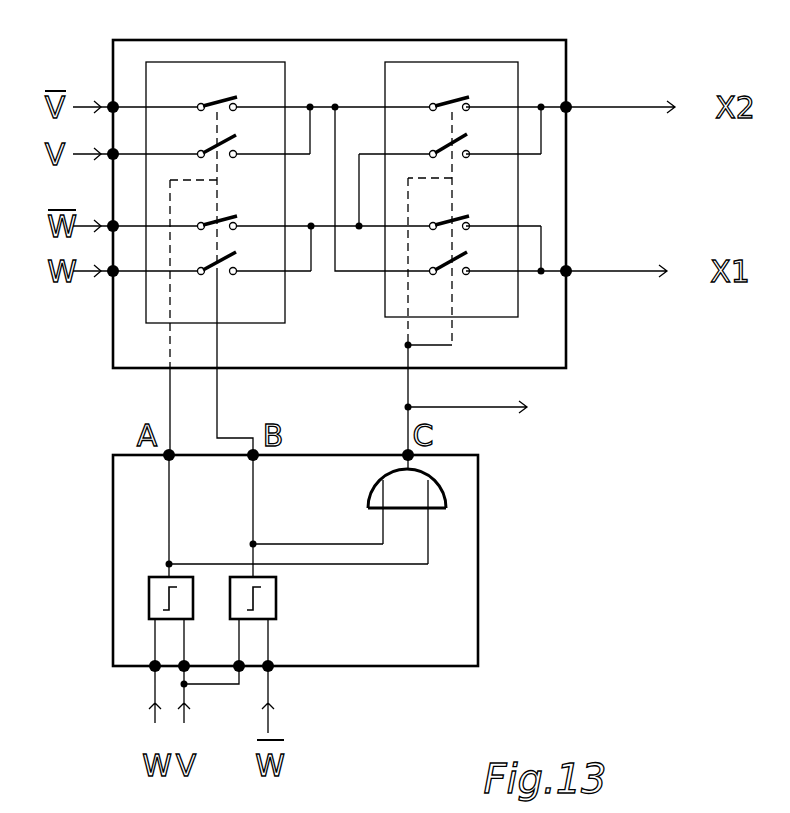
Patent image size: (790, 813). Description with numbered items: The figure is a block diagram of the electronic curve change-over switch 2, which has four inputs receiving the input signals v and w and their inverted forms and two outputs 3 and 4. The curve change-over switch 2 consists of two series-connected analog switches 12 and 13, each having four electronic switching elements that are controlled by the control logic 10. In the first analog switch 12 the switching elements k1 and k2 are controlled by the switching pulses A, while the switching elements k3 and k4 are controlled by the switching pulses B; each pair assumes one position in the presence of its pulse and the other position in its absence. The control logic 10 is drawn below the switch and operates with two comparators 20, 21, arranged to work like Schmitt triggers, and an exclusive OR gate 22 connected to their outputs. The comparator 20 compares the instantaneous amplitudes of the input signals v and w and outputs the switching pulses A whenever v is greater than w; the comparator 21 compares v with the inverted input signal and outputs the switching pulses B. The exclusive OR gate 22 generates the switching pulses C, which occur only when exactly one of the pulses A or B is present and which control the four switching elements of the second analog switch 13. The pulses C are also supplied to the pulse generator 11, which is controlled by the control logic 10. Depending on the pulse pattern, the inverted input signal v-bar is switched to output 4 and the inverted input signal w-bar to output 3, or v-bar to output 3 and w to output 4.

The curve change-over switch 2 is at (567, 75).
The output 3 is at (566, 269).
The output 4 is at (566, 107).
The control logic 10 is at (317, 586).
The pulse generator 11 is at (492, 410).
The analog switch 12 is at (235, 215).
The analog switch 13 is at (518, 293).
The comparator 20 is at (148, 595).
The comparator 21 is at (276, 603).
The exclusive OR gate 22 is at (450, 495).
The switching element k1 is at (233, 98).
The switching element k2 is at (237, 139).
The switching element k3 is at (230, 210).
The switching element k4 is at (222, 278).